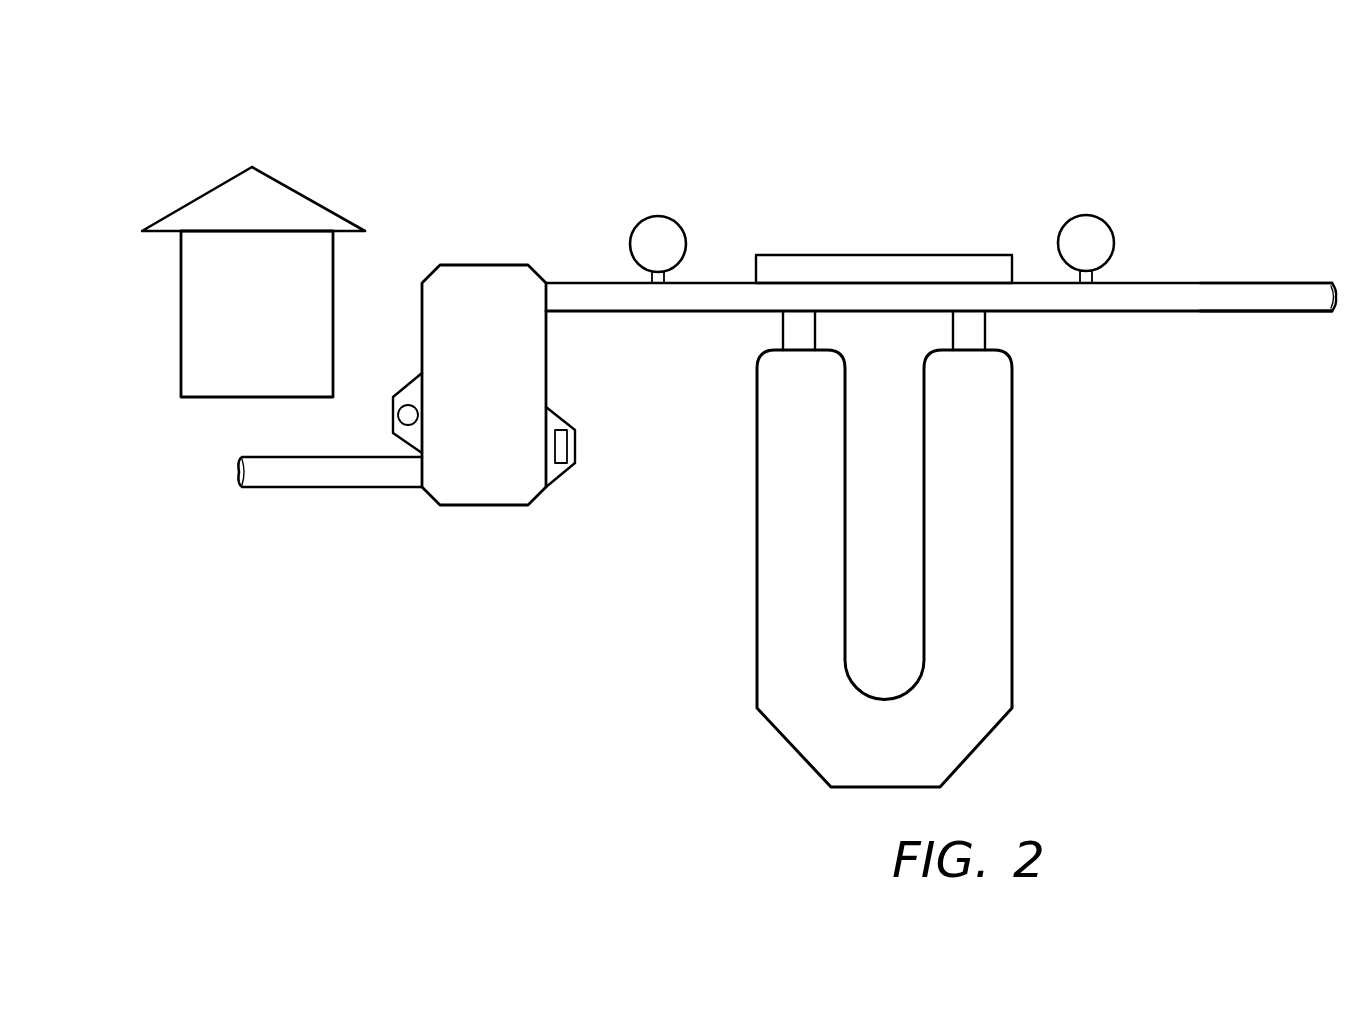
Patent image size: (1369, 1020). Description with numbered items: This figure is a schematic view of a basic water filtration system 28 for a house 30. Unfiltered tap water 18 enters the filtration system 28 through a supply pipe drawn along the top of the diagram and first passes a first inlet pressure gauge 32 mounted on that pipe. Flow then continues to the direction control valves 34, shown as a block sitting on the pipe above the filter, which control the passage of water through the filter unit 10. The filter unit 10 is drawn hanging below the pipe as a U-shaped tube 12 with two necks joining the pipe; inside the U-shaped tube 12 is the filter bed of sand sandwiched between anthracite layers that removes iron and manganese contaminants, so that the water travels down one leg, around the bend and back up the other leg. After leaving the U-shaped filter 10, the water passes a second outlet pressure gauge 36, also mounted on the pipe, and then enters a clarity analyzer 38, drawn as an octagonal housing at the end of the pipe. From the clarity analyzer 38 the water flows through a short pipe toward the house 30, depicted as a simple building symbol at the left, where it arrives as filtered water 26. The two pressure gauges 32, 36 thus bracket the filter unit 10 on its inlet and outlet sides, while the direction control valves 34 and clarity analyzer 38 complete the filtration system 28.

The filtration unit 10 is at (1017, 549).
The U-shaped tube 12 is at (902, 767).
The unfiltered tap water 18 is at (1310, 311).
The filtered water 26 is at (207, 477).
The filtration system 28 is at (660, 150).
The house 30 is at (271, 330).
The first inlet pressure gauge 32 is at (1125, 192).
The direction control valves 34 is at (930, 222).
The second outlet pressure gauge 36 is at (632, 230).
The clarity analyzer 38 is at (480, 512).